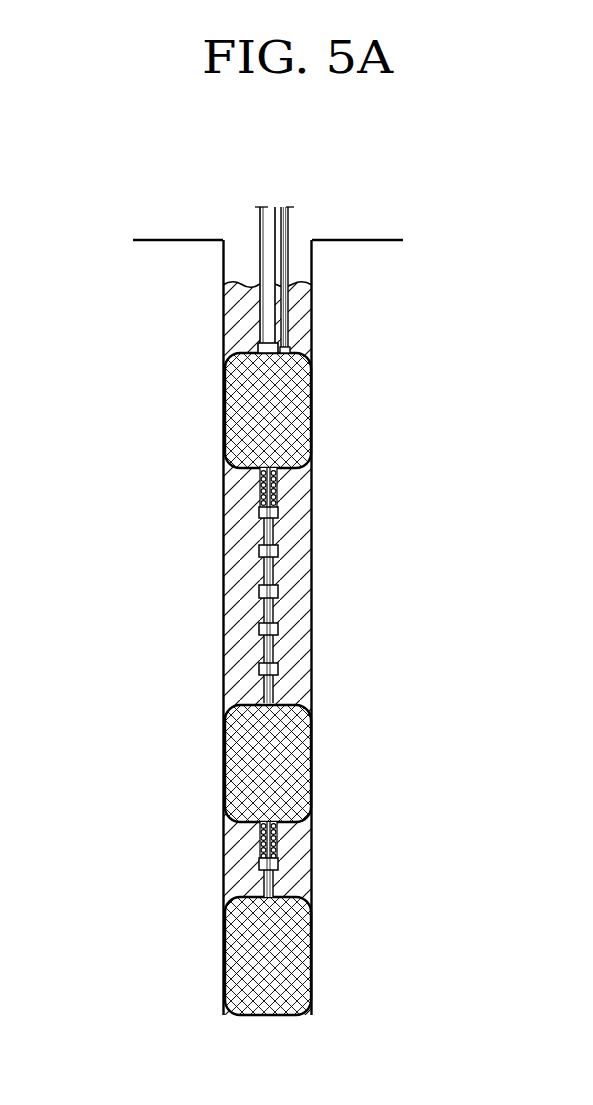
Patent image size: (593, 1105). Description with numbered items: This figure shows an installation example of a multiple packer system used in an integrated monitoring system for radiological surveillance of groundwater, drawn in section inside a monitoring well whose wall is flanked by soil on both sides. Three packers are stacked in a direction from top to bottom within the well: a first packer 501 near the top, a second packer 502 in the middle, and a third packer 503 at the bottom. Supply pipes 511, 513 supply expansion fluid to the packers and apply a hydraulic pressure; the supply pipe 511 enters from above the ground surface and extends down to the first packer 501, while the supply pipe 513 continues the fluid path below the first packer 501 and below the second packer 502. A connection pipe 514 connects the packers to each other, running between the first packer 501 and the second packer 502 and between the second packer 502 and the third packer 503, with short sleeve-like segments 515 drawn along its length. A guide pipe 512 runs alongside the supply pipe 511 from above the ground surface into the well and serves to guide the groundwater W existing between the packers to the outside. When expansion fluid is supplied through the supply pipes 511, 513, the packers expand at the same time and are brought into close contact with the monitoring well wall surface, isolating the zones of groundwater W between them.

The first packer 501 is at (298, 410).
The second packer 502 is at (300, 770).
The third packer 503 is at (297, 965).
The supply pipe 511 is at (270, 258).
The guide pipe 512 is at (285, 260).
The supply pipe 513 is at (275, 482).
The connection pipe 514 is at (275, 573).
The coupler 515 is at (275, 539).
The groundwater W is at (295, 661).